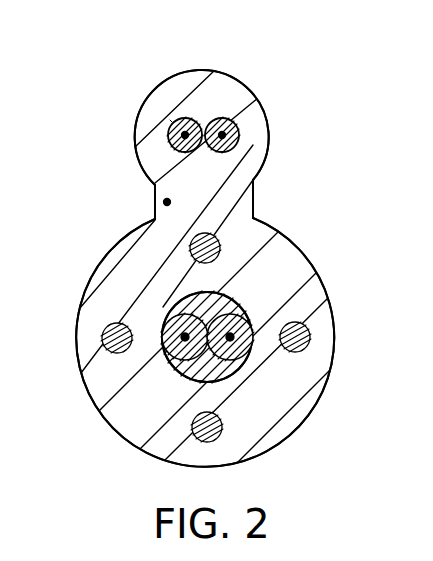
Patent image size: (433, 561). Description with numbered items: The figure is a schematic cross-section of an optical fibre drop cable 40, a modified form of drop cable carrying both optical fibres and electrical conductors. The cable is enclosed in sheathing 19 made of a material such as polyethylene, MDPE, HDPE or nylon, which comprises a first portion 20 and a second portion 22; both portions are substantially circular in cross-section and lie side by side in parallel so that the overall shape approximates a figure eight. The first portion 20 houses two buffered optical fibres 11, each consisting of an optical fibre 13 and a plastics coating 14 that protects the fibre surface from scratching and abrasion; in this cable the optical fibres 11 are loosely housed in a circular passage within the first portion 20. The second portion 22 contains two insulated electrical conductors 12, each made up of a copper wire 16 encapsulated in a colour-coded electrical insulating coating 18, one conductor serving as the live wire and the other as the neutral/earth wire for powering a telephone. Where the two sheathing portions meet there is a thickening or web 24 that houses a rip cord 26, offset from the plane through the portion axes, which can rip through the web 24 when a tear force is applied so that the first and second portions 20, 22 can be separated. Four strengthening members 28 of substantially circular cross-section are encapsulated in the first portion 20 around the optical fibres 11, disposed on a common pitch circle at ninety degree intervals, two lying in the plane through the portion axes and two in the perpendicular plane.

The buffered optical fibre 11 is at (248, 317).
The insulated electrical conductor 12 is at (172, 122).
The optical fibre 13 is at (143, 330).
The plastics coating 14 is at (163, 372).
The copper wire 16 is at (222, 117).
The electrical insulating coating 18 is at (173, 138).
The sheathing 19 is at (82, 394).
The first portion of the sheathing 20 is at (318, 384).
The second portion of the sheathing 22 is at (233, 83).
The web 24 is at (252, 218).
The rip cord 26 is at (164, 202).
The strengthening member 28 is at (221, 248).
The optical fibre drop cable 40 is at (304, 102).